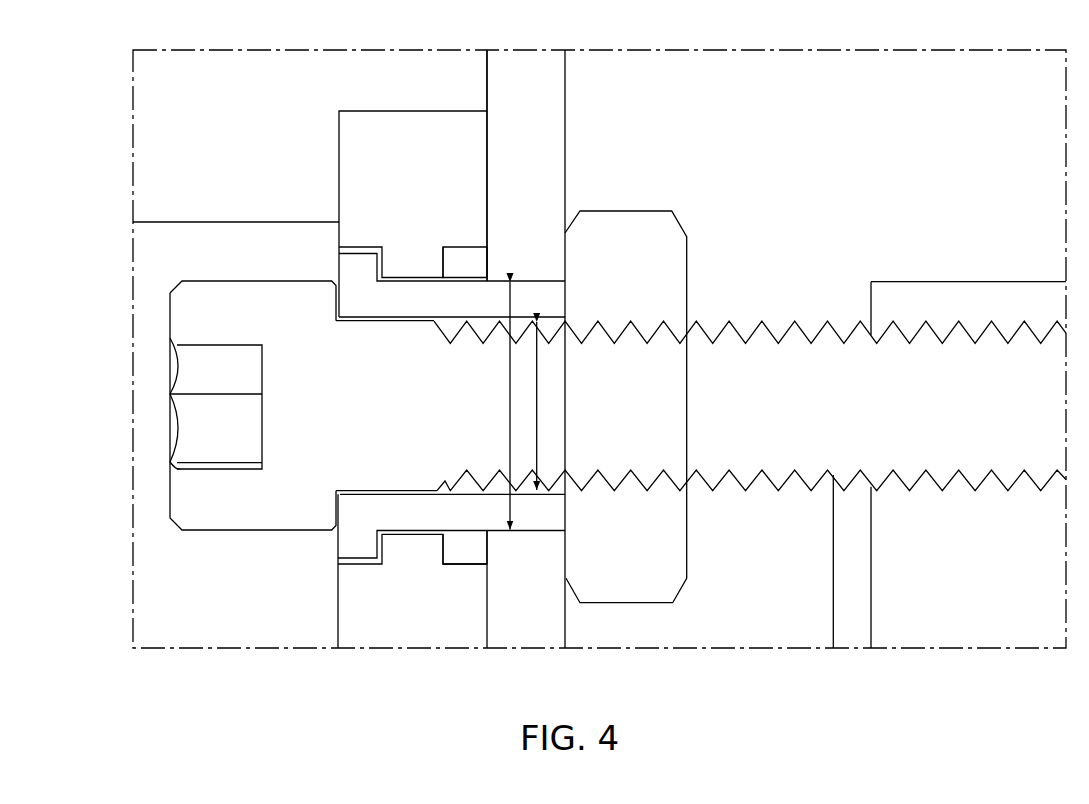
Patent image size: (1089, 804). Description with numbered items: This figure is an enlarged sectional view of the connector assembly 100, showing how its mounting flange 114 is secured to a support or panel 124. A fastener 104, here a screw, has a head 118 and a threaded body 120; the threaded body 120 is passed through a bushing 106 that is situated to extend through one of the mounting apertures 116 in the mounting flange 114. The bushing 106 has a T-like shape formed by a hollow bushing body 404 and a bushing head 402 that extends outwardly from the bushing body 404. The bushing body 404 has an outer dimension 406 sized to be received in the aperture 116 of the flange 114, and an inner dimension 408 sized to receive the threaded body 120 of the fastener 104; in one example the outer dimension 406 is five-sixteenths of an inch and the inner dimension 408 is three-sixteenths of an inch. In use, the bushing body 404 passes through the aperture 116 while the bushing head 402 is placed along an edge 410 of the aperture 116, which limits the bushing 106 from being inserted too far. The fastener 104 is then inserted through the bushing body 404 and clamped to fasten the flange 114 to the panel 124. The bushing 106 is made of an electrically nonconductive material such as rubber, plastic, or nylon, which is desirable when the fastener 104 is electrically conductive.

The connector assembly 100 is at (108, 63).
The fastener 104 is at (227, 303).
The bushing 106 is at (360, 278).
The mounting flange 114 is at (408, 138).
The mounting aperture 116 is at (468, 489).
The head 118 is at (227, 508).
The threaded body 120 is at (788, 355).
The support or panel 124 is at (540, 150).
The bushing head 402 is at (355, 544).
The bushing body 404 is at (552, 517).
The outer dimension 406 is at (510, 420).
The inner dimension 408 is at (537, 408).
The edge 410 is at (383, 265).